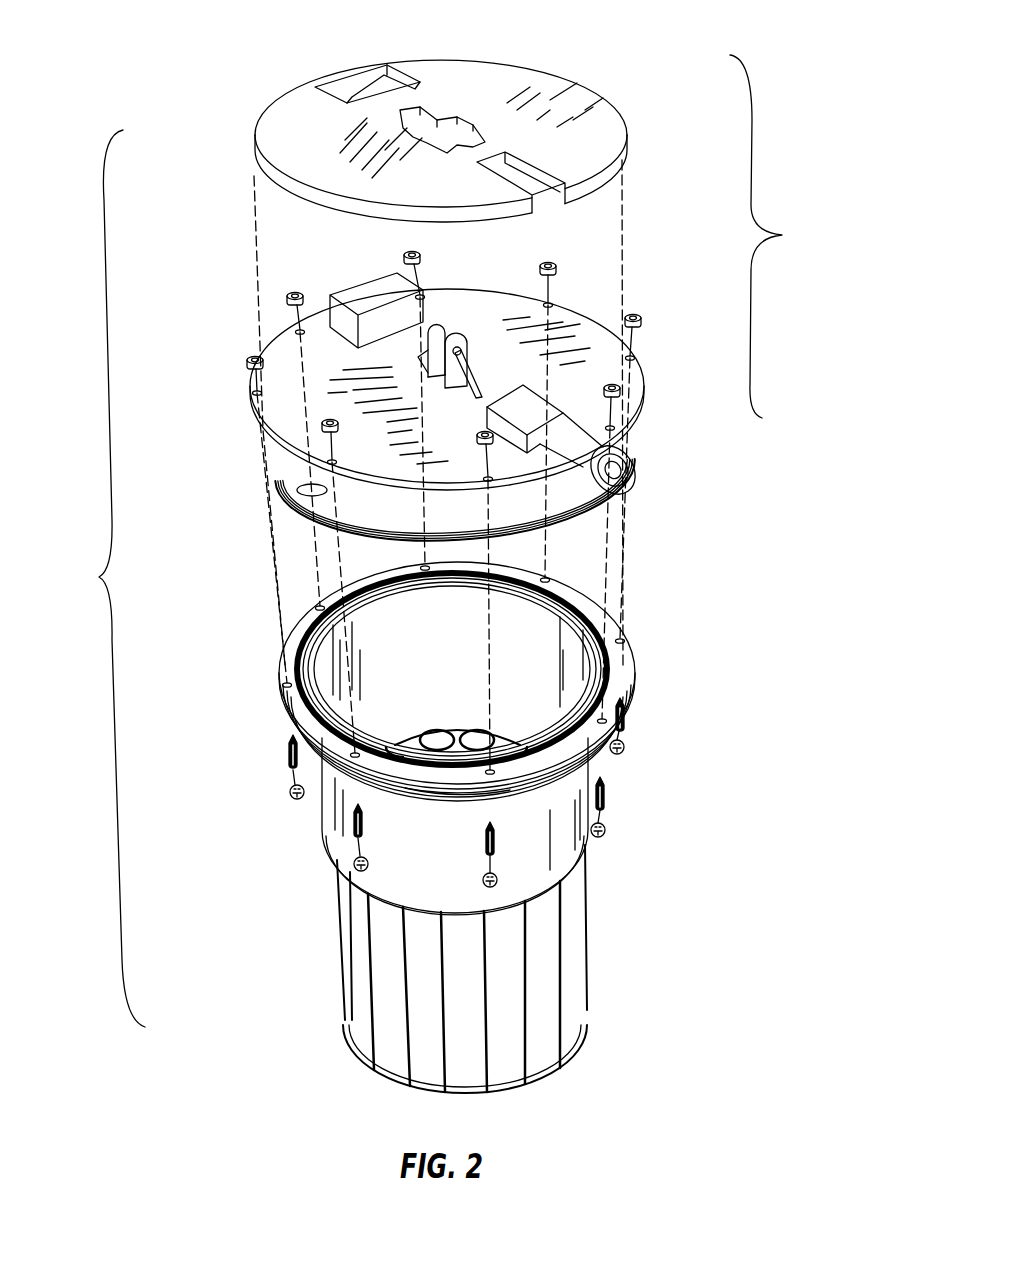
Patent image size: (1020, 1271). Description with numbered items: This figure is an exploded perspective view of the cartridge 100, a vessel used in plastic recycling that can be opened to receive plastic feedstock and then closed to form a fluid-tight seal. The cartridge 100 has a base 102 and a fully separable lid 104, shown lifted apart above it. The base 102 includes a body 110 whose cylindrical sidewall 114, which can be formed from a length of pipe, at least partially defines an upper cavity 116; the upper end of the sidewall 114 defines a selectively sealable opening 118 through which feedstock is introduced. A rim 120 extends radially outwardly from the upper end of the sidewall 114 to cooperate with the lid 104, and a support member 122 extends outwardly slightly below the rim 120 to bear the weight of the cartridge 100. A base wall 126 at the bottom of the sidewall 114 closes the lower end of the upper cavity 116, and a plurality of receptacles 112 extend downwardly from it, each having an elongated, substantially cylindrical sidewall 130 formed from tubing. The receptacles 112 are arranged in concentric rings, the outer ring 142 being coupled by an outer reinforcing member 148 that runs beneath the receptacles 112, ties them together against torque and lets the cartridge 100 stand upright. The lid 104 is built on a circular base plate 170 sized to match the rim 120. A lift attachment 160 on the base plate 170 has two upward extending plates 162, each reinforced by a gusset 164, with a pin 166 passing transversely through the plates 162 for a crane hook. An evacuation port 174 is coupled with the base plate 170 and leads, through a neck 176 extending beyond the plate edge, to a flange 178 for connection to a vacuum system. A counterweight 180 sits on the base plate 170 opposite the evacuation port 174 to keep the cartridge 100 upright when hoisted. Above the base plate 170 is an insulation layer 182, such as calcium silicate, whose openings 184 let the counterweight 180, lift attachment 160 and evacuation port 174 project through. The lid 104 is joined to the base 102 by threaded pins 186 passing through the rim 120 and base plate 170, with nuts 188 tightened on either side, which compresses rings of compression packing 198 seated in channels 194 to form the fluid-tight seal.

The cartridge 100 is at (102, 578).
The base 102 is at (658, 846).
The lid 104 is at (773, 236).
The body 110 is at (388, 873).
The receptacles 112 is at (574, 929).
The sidewall 114 is at (413, 876).
The upper cavity 116 is at (572, 692).
The selectively sealable opening 118 is at (548, 633).
The rim 120 is at (290, 690).
The support member 122 is at (345, 775).
The base wall 126 is at (427, 912).
The sidewall 130 is at (568, 957).
The outer ring 142 is at (310, 1022).
The outer reinforcing member 148 is at (560, 1078).
The lift attachment 160 is at (441, 310).
The plates 162 is at (470, 350).
The gusset 164 is at (554, 390).
The pin 166 is at (450, 338).
The base plate 170 is at (300, 338).
The evacuation port 174 is at (577, 394).
The neck 176 is at (578, 440).
The flange 178 is at (630, 470).
The counterweight 180 is at (372, 288).
The insulation layer 182 is at (580, 102).
The openings 184 is at (372, 86).
The threaded pin 186 is at (284, 752).
The nuts 188 is at (254, 360).
The channels 194 is at (325, 607).
The compression packing 198 is at (300, 492).